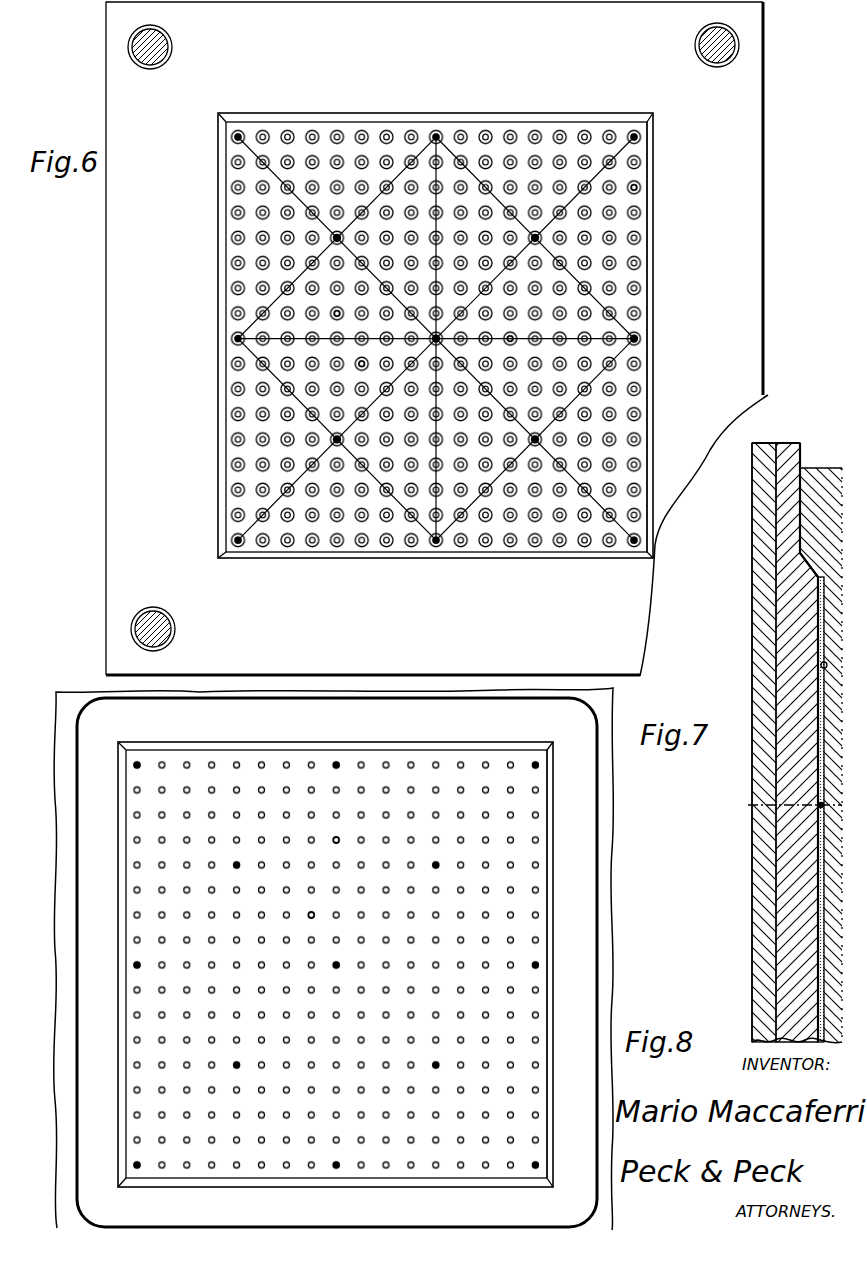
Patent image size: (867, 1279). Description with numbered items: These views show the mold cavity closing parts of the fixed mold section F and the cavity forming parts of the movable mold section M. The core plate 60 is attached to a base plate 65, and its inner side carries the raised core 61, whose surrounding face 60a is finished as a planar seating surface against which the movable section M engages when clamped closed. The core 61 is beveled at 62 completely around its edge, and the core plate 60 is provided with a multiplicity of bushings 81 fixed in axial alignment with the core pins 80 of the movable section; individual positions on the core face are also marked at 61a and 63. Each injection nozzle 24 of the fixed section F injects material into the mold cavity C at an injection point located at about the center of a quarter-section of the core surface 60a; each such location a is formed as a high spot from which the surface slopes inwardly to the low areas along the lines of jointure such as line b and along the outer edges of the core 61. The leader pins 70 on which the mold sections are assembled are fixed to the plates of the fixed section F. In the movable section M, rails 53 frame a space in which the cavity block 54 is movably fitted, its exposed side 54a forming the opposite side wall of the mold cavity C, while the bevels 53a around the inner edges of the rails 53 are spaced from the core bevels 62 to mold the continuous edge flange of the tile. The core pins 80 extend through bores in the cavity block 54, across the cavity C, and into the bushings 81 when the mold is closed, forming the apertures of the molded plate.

In FIG. 6, the core plate 60 is at (752, 203).
In FIG. 7, the core plate 60 is at (783, 452).
In FIG. 6, the surface of core plate 60a is at (740, 282).
In FIG. 7, the surface of core plate 60a is at (820, 700).
In FIG. 6, the core 61 is at (625, 250).
In FIG. 7, the core 61 is at (808, 582).
In FIG. 6, the hole 61a is at (625, 200).
In FIG. 6, the bevels of core 62 is at (648, 285).
In FIG. 7, the bevels of core 62 is at (818, 574).
In FIG. 6, the center hole 63 is at (513, 324).
In FIG. 7, the base plate 65 is at (762, 540).
In FIG. 6, the leader pins 70 is at (147, 46).
In FIG. 6, the bushings 81 is at (368, 362).
In FIG. 7, the bushings 81 is at (820, 828).
In FIG. 6, the injection nozzles 24 is at (346, 244).
In FIG. 7, the rails 53 is at (815, 482).
In FIG. 8, the rails 53 is at (568, 758).
In FIG. 8, the bevels of rails 53a is at (552, 965).
In FIG. 7, the cavity block 54 is at (832, 953).
In FIG. 8, the cavity block 54 is at (539, 872).
In FIG. 7, the outer exposed side of cavity block 54a is at (822, 665).
In FIG. 8, the outer exposed side of cavity block 54a is at (544, 903).
In FIG. 8, the core pins 80 is at (309, 912).
In FIG. 8, the movable mold section M is at (609, 821).
In FIG. 6, the fixed mold section F is at (773, 73).
In FIG. 6, the mold cavity C is at (440, 145).
In FIG. 7, the mold cavity C is at (808, 856).
In FIG. 6, the injection point elevations a is at (436, 338).
In FIG. 7, the injection point elevations a is at (818, 803).
In FIG. 6, the line of jointure b is at (637, 335).